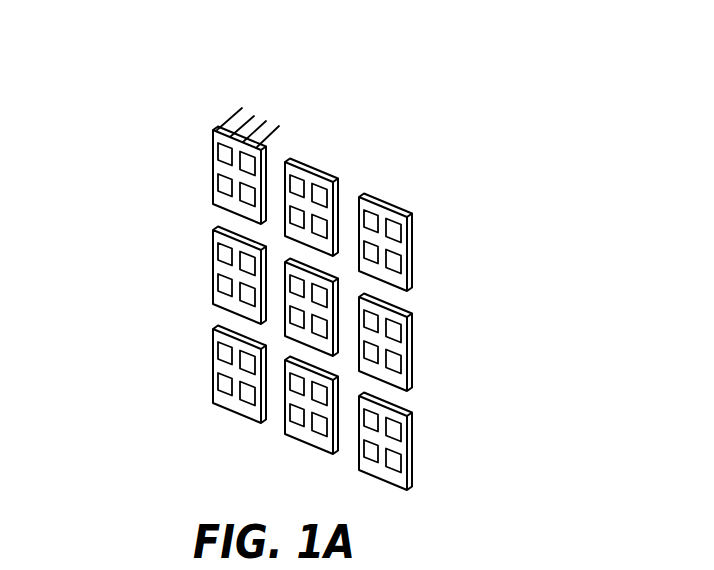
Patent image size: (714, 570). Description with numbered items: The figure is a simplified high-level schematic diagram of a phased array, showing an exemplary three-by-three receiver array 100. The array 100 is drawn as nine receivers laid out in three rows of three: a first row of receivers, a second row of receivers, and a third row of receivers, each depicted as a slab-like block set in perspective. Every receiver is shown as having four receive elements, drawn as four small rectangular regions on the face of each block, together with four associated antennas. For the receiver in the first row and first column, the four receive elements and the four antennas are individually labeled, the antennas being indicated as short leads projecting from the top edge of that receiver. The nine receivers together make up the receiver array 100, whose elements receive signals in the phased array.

The array 100 is at (474, 88).